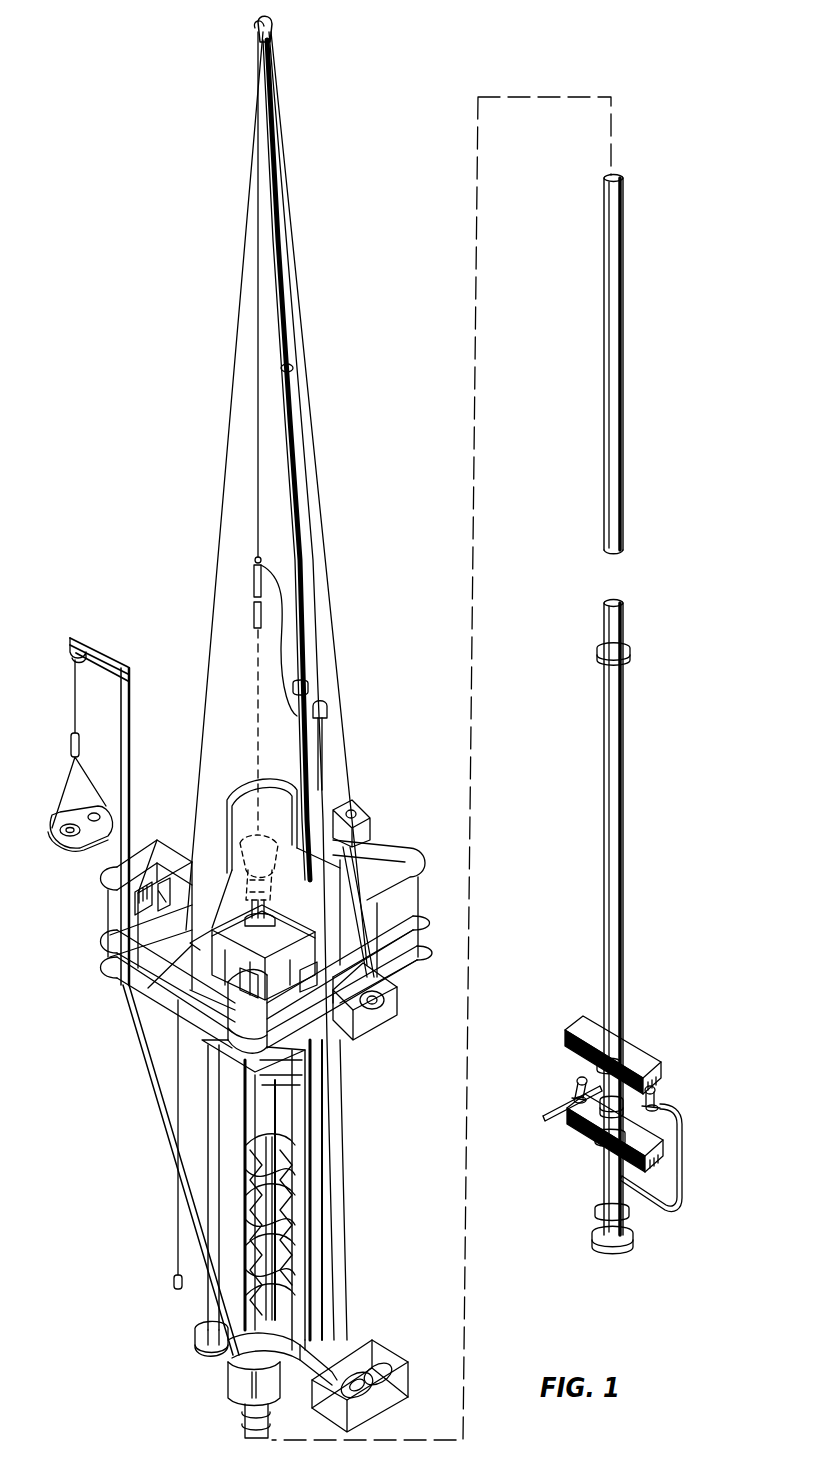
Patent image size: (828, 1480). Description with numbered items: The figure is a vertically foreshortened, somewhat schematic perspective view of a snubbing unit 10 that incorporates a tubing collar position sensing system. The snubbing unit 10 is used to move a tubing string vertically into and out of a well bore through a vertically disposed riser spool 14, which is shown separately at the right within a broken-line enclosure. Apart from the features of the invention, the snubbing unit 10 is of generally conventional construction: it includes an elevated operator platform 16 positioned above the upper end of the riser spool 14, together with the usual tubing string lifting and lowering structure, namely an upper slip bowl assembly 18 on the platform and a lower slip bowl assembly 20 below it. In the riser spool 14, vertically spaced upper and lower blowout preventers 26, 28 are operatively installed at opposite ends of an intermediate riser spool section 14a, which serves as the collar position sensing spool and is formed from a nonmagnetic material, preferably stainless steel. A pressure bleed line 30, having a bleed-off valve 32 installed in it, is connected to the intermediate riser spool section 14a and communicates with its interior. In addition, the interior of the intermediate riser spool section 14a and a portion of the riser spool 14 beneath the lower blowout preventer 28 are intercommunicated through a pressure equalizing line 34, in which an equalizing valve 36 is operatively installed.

The snubbing unit 10 is at (160, 447).
The riser spool 14 is at (243, 1420).
The intermediate riser spool section 14a is at (600, 1066).
The elevated operator platform 16 is at (210, 1000).
The upper slip bowl assembly 18 is at (245, 840).
The lower slip bowl assembly 20 is at (283, 1215).
The upper blowout preventer 26 is at (637, 1056).
The lower blowout preventer 28 is at (657, 1143).
The pressure bleed line 30 is at (553, 1107).
The bleed-off valve 32 is at (578, 1090).
The pressure equalizing line 34 is at (683, 1183).
The equalizing valve 36 is at (662, 1097).